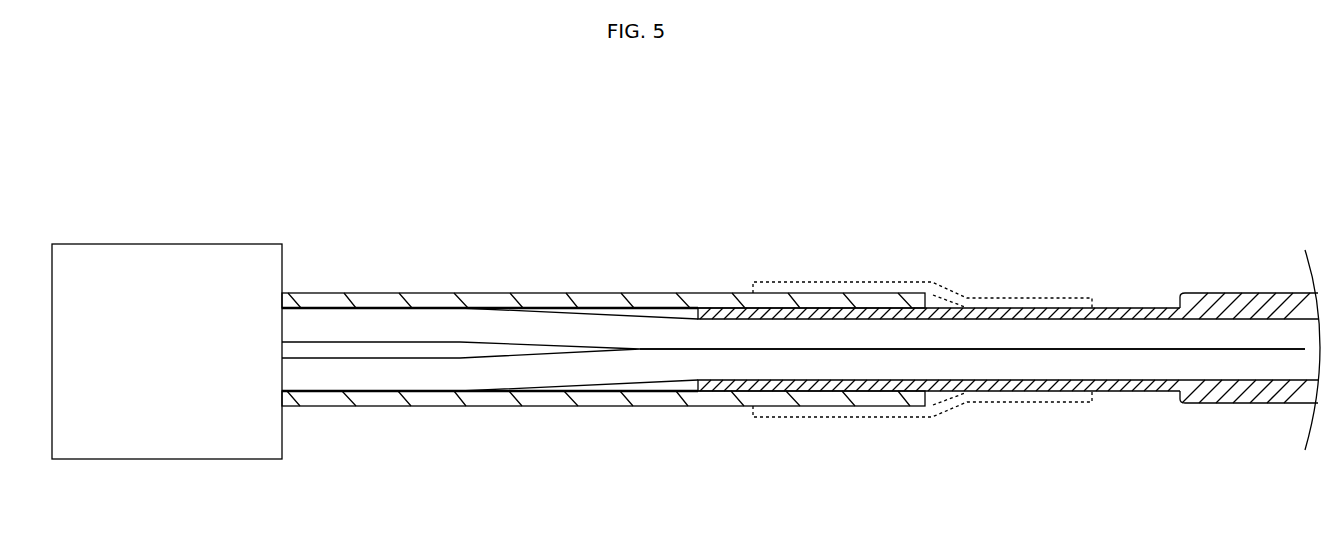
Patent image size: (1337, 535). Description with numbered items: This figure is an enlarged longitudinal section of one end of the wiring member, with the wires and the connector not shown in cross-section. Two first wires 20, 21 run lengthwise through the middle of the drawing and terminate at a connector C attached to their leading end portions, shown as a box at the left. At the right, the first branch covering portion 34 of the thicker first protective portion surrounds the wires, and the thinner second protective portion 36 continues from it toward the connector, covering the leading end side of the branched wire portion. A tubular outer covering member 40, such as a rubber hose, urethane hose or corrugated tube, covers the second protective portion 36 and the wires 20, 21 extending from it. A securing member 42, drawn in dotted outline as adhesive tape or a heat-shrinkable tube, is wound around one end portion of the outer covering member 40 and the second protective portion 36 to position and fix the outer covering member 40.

The connector C is at (169, 442).
The outer covering member 40 is at (430, 293).
The securing member 42 is at (830, 280).
The second protective portion 36 is at (1118, 307).
The first branch covering portion 34 is at (1227, 292).
The wire 20 is at (1165, 338).
The wire 21 is at (1112, 368).